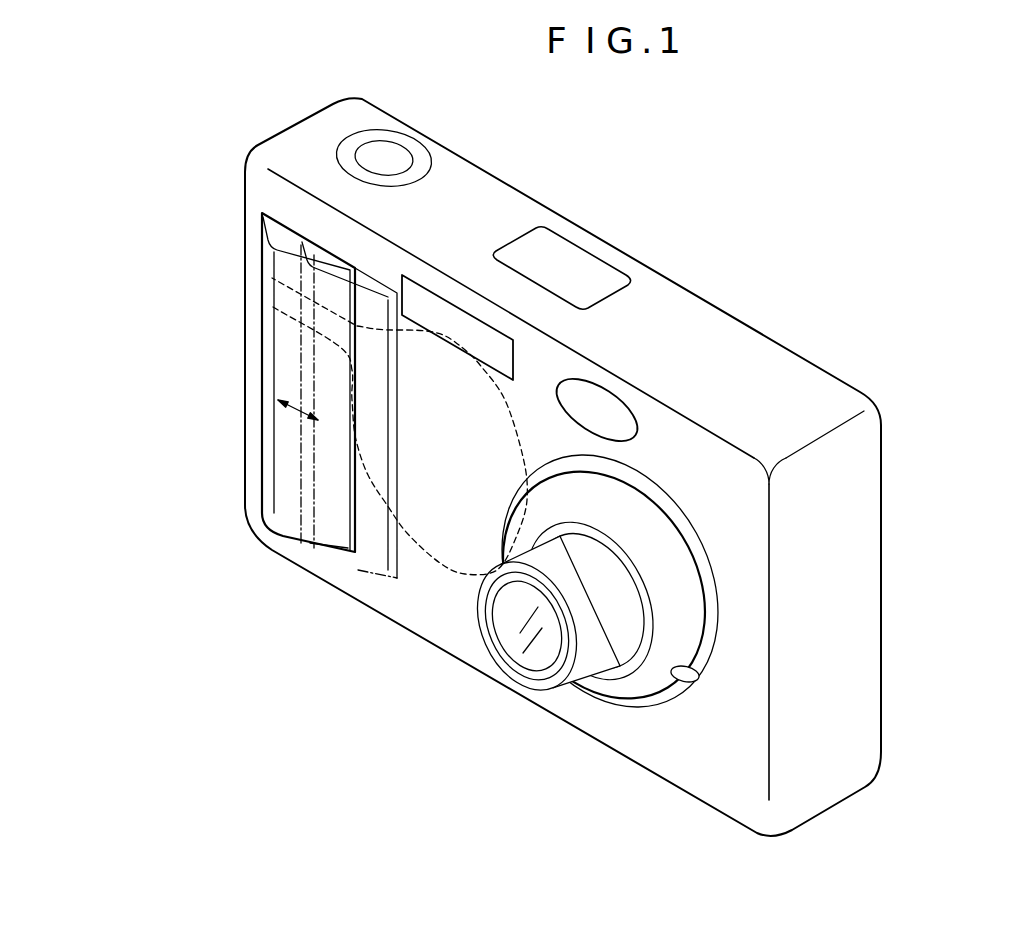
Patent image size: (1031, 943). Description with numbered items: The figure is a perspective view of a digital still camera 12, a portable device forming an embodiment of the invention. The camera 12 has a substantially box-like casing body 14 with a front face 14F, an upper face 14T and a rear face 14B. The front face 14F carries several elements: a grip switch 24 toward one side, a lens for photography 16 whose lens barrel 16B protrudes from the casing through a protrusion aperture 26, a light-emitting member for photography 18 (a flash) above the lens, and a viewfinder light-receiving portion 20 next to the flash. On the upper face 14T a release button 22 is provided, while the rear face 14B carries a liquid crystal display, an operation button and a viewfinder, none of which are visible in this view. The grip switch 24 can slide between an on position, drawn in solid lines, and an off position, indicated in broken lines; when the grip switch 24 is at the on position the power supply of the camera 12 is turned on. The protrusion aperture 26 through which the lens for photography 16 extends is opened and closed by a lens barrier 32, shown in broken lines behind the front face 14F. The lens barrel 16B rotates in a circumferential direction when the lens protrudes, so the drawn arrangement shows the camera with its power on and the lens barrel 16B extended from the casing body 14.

The digital still camera 12 is at (878, 157).
The casing body 14 is at (888, 518).
The upper face 14T is at (765, 338).
The rear face 14B is at (884, 651).
The front face 14F is at (713, 777).
The lens for photography 16 is at (484, 643).
The lens barrel 16B is at (680, 578).
The light-emitting member for photography 18 is at (440, 319).
The viewfinder light-receiving portion 20 is at (603, 416).
The release button 22 is at (383, 150).
The grip switch 24 is at (277, 537).
The protrusion aperture 26 is at (700, 678).
The lens barrier 32 is at (437, 567).